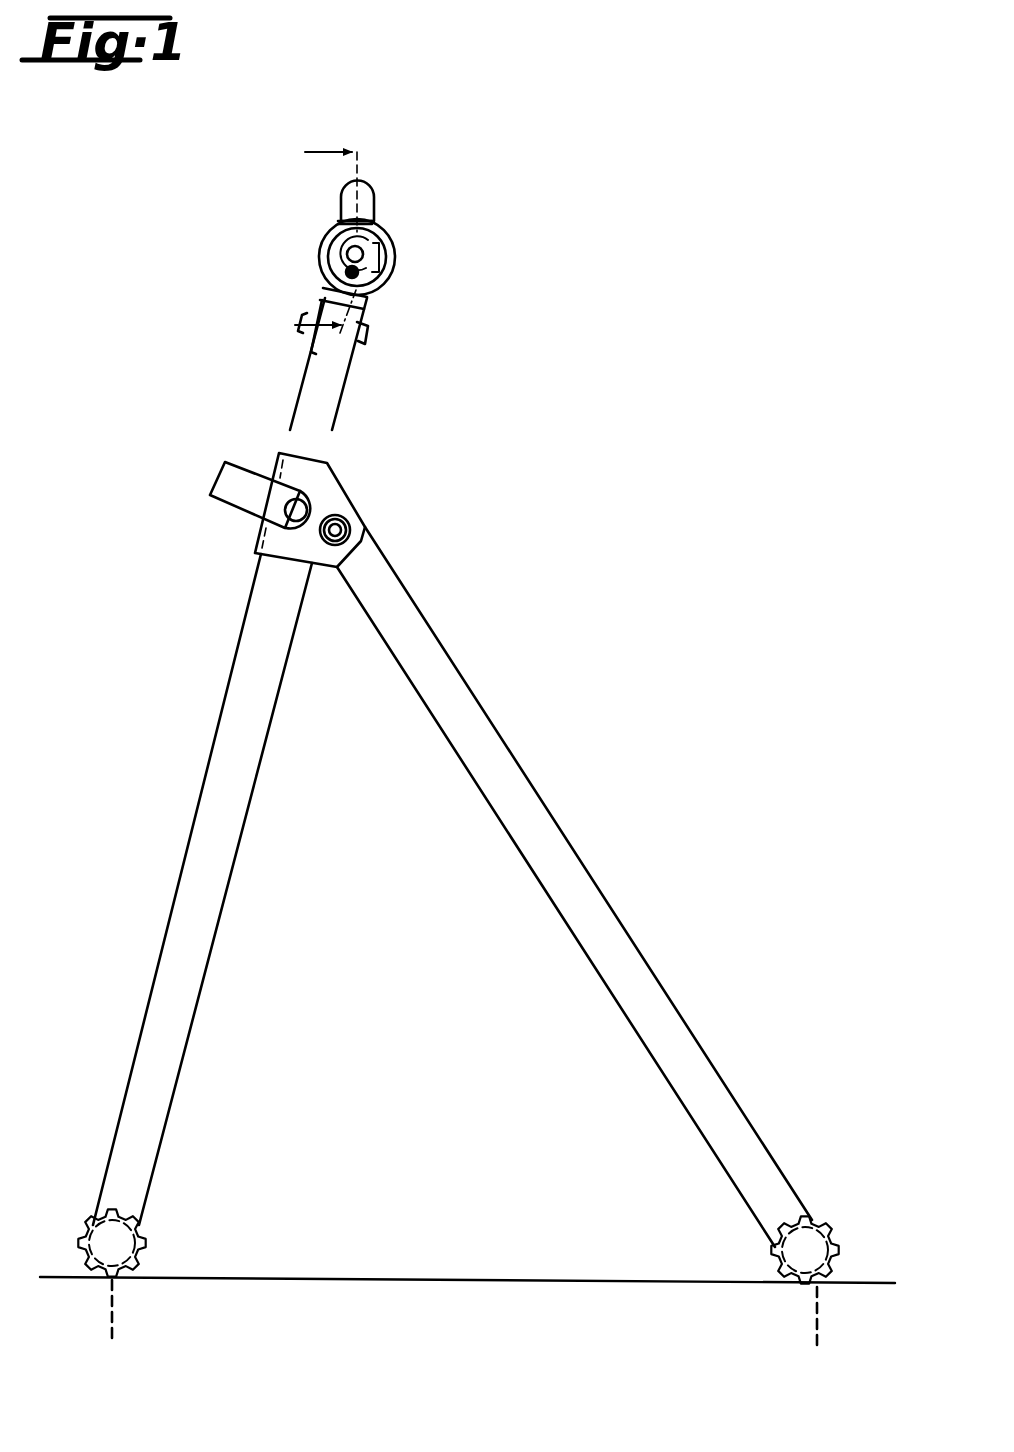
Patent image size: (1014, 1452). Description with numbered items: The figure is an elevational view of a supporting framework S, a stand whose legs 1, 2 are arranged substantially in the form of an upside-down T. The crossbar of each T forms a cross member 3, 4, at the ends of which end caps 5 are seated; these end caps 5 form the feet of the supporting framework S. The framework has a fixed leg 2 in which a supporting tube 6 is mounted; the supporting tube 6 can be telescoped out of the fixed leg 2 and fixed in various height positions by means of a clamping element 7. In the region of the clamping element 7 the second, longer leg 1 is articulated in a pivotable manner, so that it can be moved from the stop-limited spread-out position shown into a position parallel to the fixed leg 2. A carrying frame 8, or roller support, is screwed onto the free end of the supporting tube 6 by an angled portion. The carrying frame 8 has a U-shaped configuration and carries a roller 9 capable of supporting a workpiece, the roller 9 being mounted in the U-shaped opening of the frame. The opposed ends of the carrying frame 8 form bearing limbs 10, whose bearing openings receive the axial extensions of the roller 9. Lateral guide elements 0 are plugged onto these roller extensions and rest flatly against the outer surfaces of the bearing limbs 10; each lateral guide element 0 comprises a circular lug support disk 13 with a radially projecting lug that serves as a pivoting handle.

The supporting framework S is at (483, 706).
The lateral guide element 0 is at (370, 183).
The second, longer leg 1 is at (605, 927).
The fixed leg 2 is at (180, 932).
The cross member 3 is at (818, 1332).
The cross member 4 is at (113, 1329).
The end cap 5 is at (140, 1232).
The supporting tube 6 is at (315, 407).
The clamping element 7 is at (233, 485).
The carrying frame 8 is at (366, 298).
The roller 9 is at (330, 237).
The bearing limb 10 is at (330, 282).
The lug support disk 13 is at (371, 236).